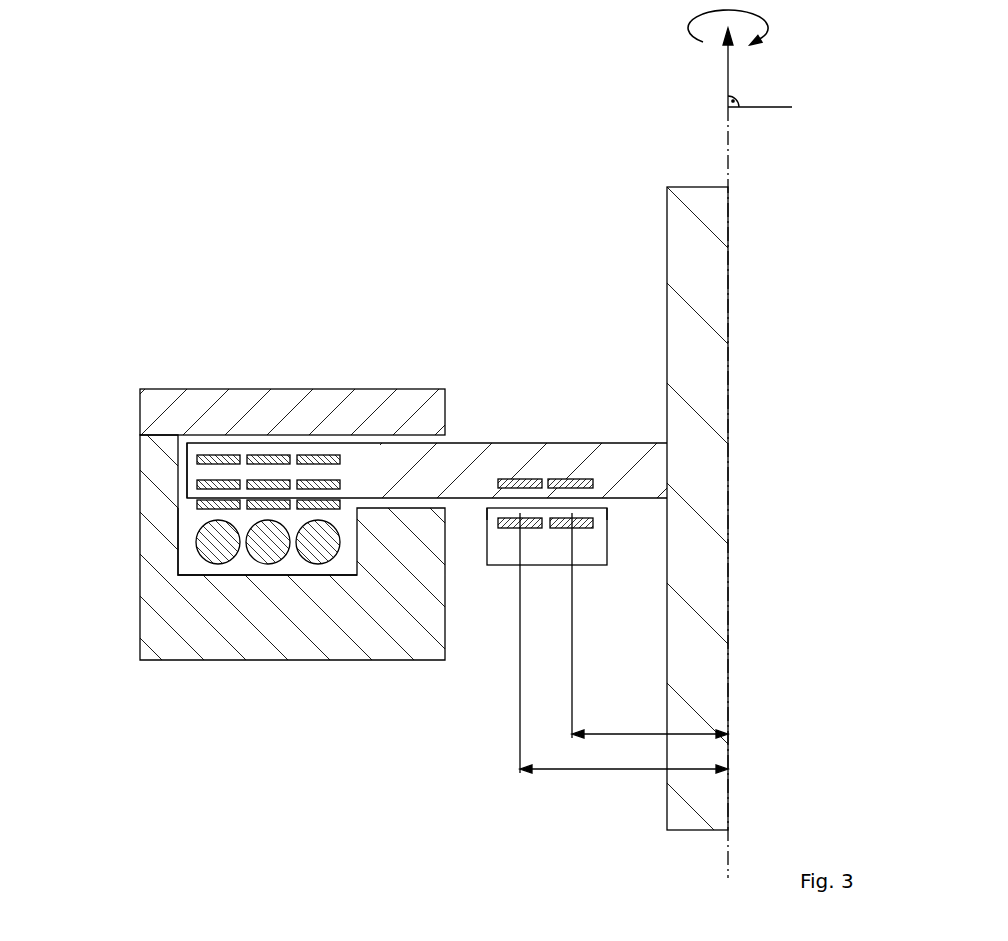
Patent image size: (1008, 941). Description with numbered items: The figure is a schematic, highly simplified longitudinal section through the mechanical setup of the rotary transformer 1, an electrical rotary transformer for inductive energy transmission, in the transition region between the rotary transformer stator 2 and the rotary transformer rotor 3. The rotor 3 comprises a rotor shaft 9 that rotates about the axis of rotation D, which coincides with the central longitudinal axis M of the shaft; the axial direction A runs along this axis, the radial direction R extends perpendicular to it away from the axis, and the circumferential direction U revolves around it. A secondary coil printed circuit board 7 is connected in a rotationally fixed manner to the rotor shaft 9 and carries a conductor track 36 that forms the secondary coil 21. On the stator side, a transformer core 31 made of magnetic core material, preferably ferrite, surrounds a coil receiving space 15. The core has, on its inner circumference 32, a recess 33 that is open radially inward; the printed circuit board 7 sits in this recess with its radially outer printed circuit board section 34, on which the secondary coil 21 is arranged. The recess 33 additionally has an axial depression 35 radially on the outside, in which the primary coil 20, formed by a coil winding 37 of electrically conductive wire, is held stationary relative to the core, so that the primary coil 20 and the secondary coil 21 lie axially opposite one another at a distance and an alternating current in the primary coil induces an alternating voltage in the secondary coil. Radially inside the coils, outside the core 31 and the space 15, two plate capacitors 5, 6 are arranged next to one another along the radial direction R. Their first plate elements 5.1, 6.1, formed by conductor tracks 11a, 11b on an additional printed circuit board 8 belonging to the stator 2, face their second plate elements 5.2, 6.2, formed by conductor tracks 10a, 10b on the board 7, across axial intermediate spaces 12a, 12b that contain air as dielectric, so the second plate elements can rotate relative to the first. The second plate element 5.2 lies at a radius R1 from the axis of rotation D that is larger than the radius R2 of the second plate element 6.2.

The rotary transformer 1 is at (163, 170).
The rotary transformer stator 2 is at (158, 303).
The rotary transformer rotor 3 is at (550, 303).
The first plate capacitor 5 is at (531, 545).
The second plate capacitor 6 is at (577, 545).
The secondary coil printed circuit board 7 is at (472, 441).
The additional printed circuit board 8 is at (548, 568).
The rotor shaft 9 is at (677, 225).
The coil receiving space 15 is at (187, 527).
The primary coil 20 is at (268, 616).
The secondary coil 21 is at (268, 425).
The transformer core 31 is at (140, 498).
The inner circumference 32 is at (446, 643).
The recess 33 is at (408, 448).
The radially outer printed circuit board section 34 is at (187, 473).
The axial depression 35 is at (185, 558).
The conductor track 36 is at (318, 504).
The coil winding 37 is at (318, 558).
The first plate element of the first plate capacitor 5.1 is at (496, 563).
The second plate element of the first plate capacitor 5.2 is at (531, 443).
The first plate element of the second plate capacitor 6.1 is at (609, 563).
The second plate element of the second plate capacitor 6.2 is at (607, 443).
The conductor track 10a is at (512, 480).
The conductor track 10b is at (587, 480).
The conductor track 11a is at (505, 528).
The conductor track 11b is at (592, 530).
The axial intermediate space 12a is at (495, 505).
The axial intermediate space 12b is at (600, 505).
The axial direction A is at (726, 70).
The axis of rotation D is at (680, 492).
The central longitudinal axis M is at (726, 144).
The radial direction R is at (763, 110).
The radius of the second plate element of the first plate capacitor R1 is at (625, 772).
The radius of the second plate element of the second plate capacitor R2 is at (622, 732).
The circumferential direction U is at (688, 25).